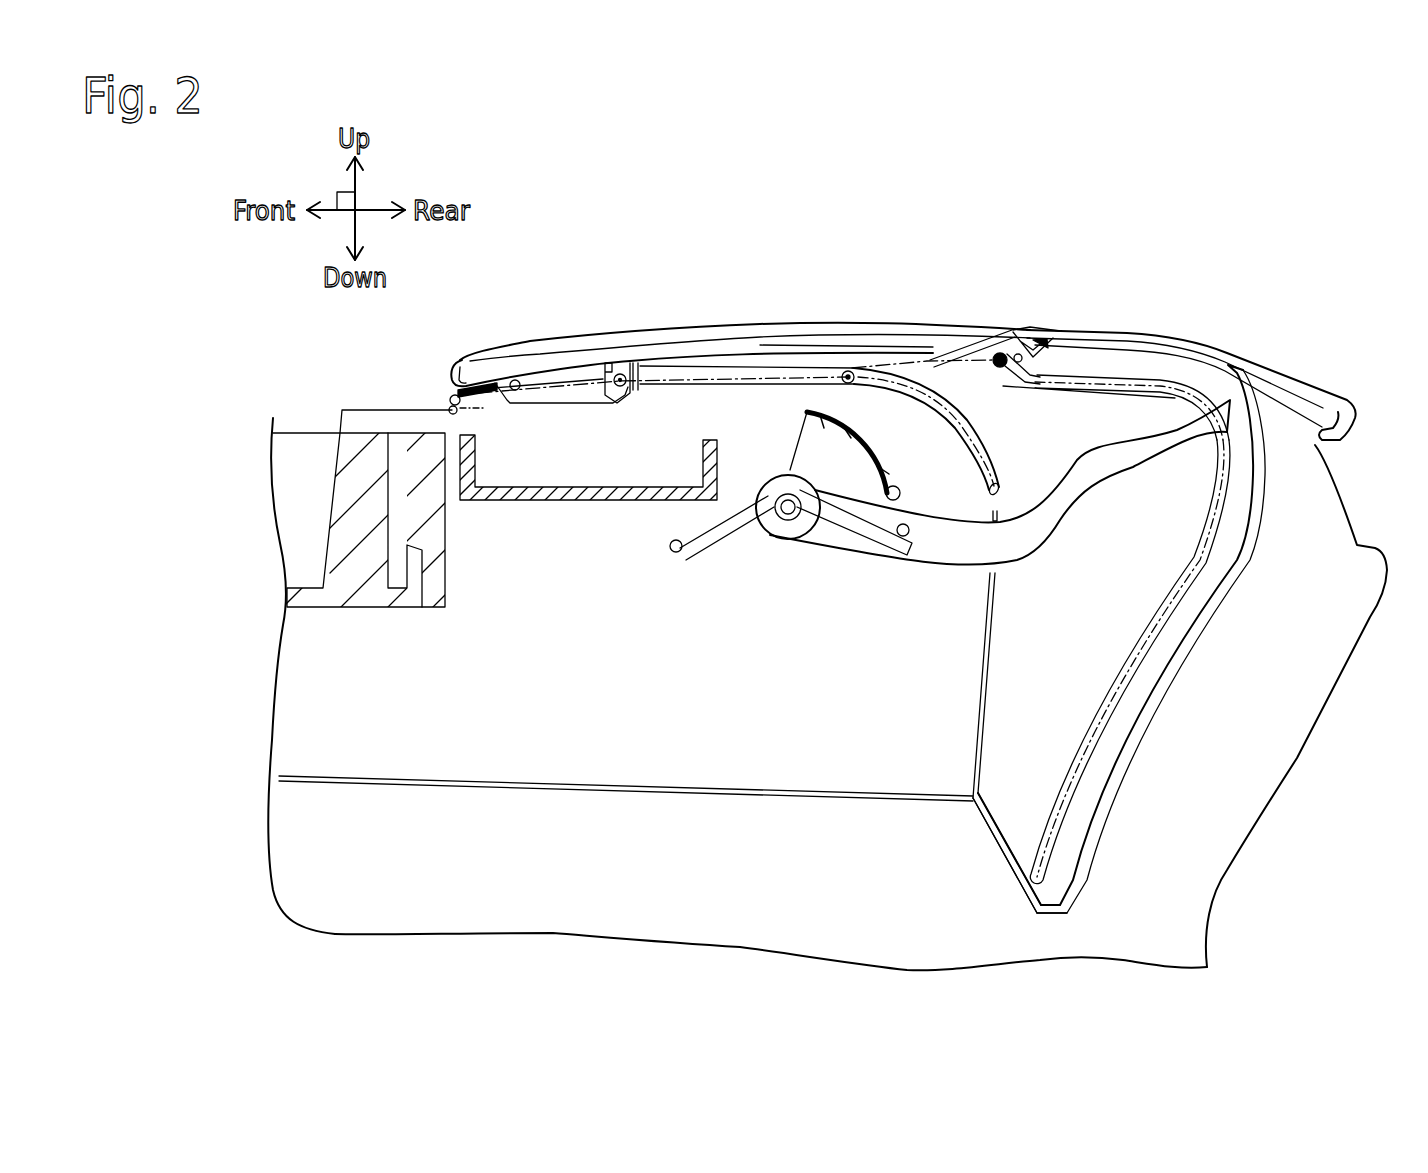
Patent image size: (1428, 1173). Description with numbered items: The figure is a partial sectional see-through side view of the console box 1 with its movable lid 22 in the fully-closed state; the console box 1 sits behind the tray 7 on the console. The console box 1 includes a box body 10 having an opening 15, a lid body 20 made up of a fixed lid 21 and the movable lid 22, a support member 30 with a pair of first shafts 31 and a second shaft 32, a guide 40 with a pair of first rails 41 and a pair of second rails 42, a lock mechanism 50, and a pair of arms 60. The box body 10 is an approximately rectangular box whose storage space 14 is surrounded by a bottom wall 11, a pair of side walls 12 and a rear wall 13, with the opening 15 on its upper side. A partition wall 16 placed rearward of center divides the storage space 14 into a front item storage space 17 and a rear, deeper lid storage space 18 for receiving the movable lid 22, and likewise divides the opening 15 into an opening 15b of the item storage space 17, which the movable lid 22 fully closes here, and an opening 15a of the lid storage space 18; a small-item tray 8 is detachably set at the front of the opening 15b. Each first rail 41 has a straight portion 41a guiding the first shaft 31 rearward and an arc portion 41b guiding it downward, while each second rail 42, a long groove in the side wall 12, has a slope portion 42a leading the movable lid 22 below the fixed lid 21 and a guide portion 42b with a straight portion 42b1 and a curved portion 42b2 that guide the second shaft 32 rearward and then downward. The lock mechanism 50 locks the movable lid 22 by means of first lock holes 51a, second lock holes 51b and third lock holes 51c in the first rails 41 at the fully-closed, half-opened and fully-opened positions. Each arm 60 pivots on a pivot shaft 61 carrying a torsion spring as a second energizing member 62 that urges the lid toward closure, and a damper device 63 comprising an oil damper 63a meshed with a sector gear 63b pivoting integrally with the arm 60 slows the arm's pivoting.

The console box 1 is at (1367, 332).
The tray 7 is at (303, 470).
The small-item tray 8 is at (530, 502).
The box body 10 is at (1333, 739).
The bottom wall 11 is at (508, 791).
The side walls 12 is at (585, 707).
The rear wall 13 is at (1160, 747).
The storage space 14 is at (929, 870).
The opening 15 is at (974, 372).
The opening of the lid storage space 15a is at (1147, 372).
The opening of the item storage space 15b is at (750, 345).
The partition wall 16 is at (973, 707).
The item storage space 17 is at (807, 713).
The lid storage space 18 is at (1037, 747).
The lid body 20 is at (716, 310).
The fixed lid 21 is at (1263, 353).
The movable lid 22 is at (530, 340).
The support member 30 is at (821, 321).
The first shafts 31 is at (612, 365).
The second shaft 32 is at (989, 333).
The guide 40 is at (995, 554).
The first rails 41 is at (937, 282).
The straight portion 41a is at (827, 340).
The arc portion 41b is at (914, 342).
The second rails 42 is at (1172, 284).
The slope portion 42a is at (1037, 362).
The guide portion 42b is at (1117, 378).
The straight portion 42b1 is at (1143, 400).
The curved portion 42b2 is at (1190, 580).
The lock mechanism 50 is at (436, 395).
The first lock holes 51a is at (636, 400).
The second lock holes 51b is at (860, 392).
The third lock holes 51c is at (990, 497).
The arms 60 is at (1013, 573).
The pivot shafts 61 is at (790, 513).
The second energizing member 62 is at (720, 540).
The damper device 63 is at (886, 598).
The oil damper 63a is at (893, 500).
The sector gear 63b is at (837, 467).